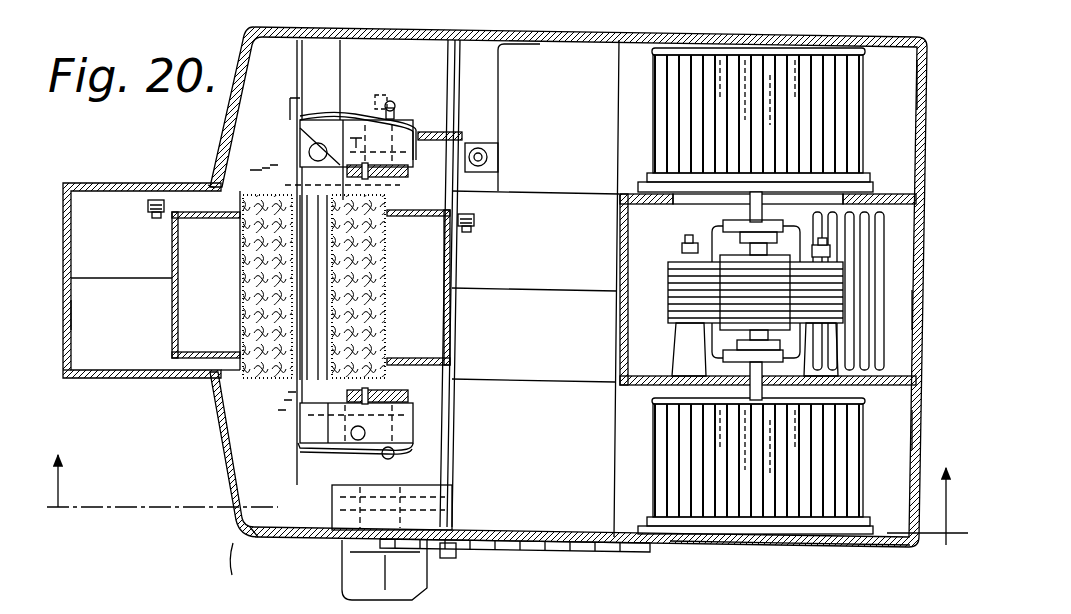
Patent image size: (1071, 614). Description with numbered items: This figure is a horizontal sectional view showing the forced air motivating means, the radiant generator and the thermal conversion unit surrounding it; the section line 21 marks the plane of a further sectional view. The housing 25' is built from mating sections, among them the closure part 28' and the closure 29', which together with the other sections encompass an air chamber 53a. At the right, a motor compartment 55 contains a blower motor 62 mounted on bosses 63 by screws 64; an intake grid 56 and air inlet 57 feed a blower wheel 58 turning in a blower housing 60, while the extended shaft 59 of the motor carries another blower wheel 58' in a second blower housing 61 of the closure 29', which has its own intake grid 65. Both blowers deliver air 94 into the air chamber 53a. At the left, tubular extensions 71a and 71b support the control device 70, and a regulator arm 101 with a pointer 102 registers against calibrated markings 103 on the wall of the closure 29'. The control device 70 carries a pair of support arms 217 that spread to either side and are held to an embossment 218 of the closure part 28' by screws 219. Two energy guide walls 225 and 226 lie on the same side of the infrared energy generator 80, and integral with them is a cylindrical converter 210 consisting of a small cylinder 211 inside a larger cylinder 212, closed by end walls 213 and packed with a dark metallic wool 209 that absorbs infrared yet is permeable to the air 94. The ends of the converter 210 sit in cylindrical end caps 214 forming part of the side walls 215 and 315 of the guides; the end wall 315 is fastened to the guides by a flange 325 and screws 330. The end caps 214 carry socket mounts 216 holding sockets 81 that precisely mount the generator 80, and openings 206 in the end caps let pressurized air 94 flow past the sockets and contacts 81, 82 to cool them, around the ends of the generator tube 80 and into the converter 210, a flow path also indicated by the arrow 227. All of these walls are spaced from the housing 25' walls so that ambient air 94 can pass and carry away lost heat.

The section line 21 is at (507, 531).
The housing 25' is at (178, 561).
The closure part 28' is at (557, 277).
The closure 29' is at (210, 574).
The air chamber 53a is at (585, 256).
The motor compartment 55 is at (897, 312).
The intake grid 56 is at (852, 278).
The air inlet 57 is at (650, 196).
The blower wheel 58 is at (778, 110).
The blower wheel 58' is at (723, 466).
The extended shaft 59 is at (622, 205).
The blower housing 60 is at (905, 83).
The blower housing 61 is at (888, 422).
The blower motor 62 is at (660, 303).
The bosses 63 is at (676, 355).
The screws 64 is at (690, 240).
The intake grid 65 is at (753, 550).
The control device 70 is at (452, 457).
The tubular extension 71a is at (480, 52).
The tubular extension 71b is at (330, 510).
The infrared generator 80 is at (247, 314).
The sockets 81 is at (495, 98).
The contacts 82 is at (318, 118).
The air 94 is at (289, 166).
The regulator arm 101 is at (357, 573).
The pointer 102 is at (440, 560).
The calibrated markings 103 is at (473, 550).
The openings 206 is at (275, 165).
The infrared absorbing material 209 is at (247, 323).
The cylindrical converter 210 is at (228, 287).
The small cylinder 211 is at (382, 234).
The larger cylinder 212 is at (247, 337).
The end walls 213 is at (255, 170).
The cylindrical end caps 214 is at (262, 168).
The side wall 215 is at (185, 383).
The socket mounts 216 is at (445, 112).
The support arms 217 is at (340, 118).
The embossment 218 is at (315, 62).
The screws 219 is at (495, 158).
The energy guide wall 225 is at (168, 320).
The energy guide wall 226 is at (423, 287).
The air flow 227 is at (205, 276).
The end wall 315 is at (210, 185).
The flange 325 is at (148, 212).
The screws 330 is at (155, 222).